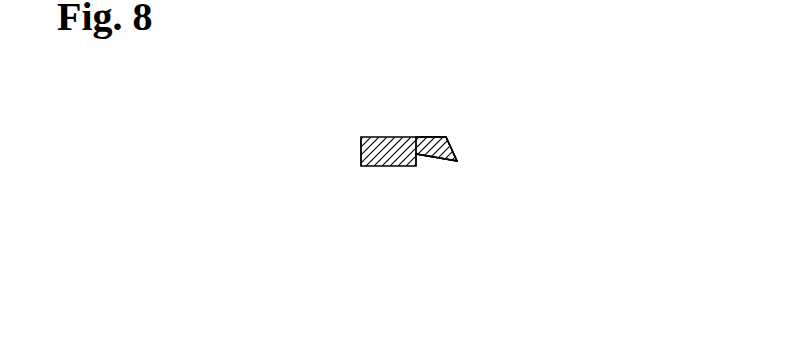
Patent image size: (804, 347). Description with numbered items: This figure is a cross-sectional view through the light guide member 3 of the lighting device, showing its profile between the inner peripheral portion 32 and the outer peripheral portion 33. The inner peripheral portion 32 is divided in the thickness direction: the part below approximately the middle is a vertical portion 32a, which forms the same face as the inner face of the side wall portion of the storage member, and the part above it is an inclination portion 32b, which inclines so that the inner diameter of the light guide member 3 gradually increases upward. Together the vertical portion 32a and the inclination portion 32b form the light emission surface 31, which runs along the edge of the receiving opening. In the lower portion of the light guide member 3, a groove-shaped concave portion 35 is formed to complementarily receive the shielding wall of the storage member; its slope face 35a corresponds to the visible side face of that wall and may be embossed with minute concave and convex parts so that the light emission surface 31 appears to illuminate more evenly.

The light guide member 3 is at (361, 166).
The light emission surface 31 is at (452, 148).
The inner peripheral portion 32 is at (436, 149).
The vertical portion 32a is at (457, 159).
The inclination portion 32b is at (450, 137).
The outer peripheral portion 33 is at (361, 149).
The concave portion 35 is at (425, 160).
The slope face 35a is at (438, 159).